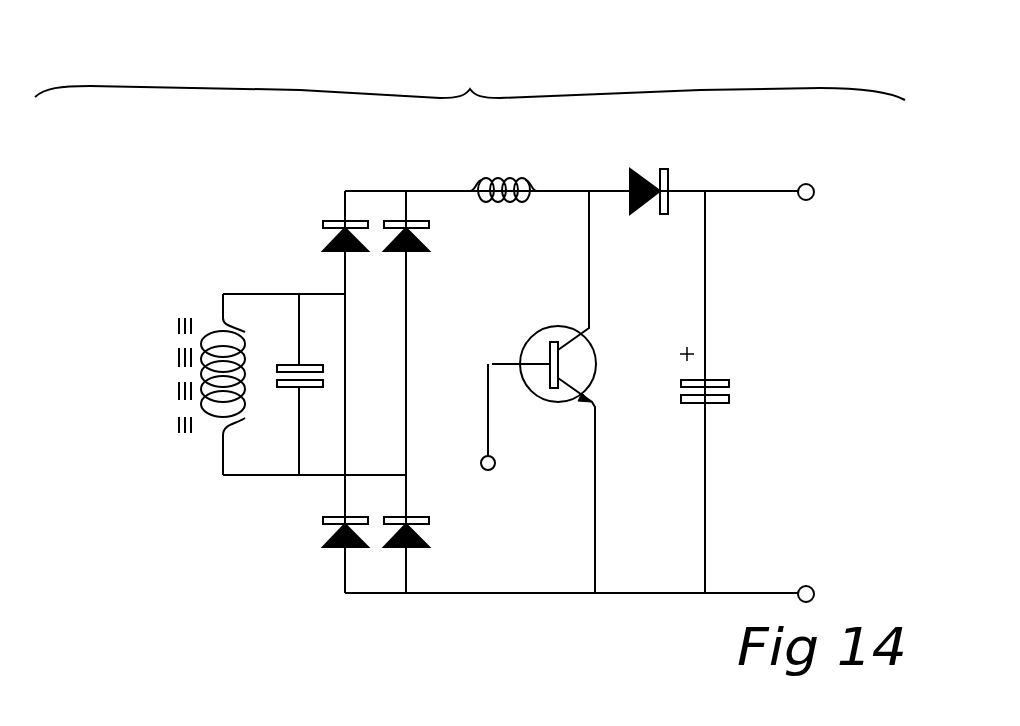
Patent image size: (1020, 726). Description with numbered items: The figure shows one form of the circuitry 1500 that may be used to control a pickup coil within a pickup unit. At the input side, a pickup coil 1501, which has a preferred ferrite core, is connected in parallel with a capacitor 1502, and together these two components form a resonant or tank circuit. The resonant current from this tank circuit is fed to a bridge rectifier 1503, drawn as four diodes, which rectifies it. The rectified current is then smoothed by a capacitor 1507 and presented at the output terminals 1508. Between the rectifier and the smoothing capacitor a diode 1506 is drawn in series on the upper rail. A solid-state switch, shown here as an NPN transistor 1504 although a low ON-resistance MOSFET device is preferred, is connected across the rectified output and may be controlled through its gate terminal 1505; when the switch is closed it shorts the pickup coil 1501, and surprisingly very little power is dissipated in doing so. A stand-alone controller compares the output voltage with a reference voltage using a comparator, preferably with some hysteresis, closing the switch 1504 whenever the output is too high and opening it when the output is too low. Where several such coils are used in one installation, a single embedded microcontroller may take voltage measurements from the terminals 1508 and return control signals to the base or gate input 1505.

The circuitry 1500 is at (470, 76).
The pickup coil 1501 is at (228, 466).
The capacitor 1502 is at (280, 352).
The bridge rectifier 1503 is at (330, 212).
The NPN transistor 1504 is at (542, 326).
The gate terminal 1505 is at (568, 485).
The diode 1506 is at (668, 170).
The capacitor 1507 is at (770, 373).
The output terminals 1508 is at (814, 192).